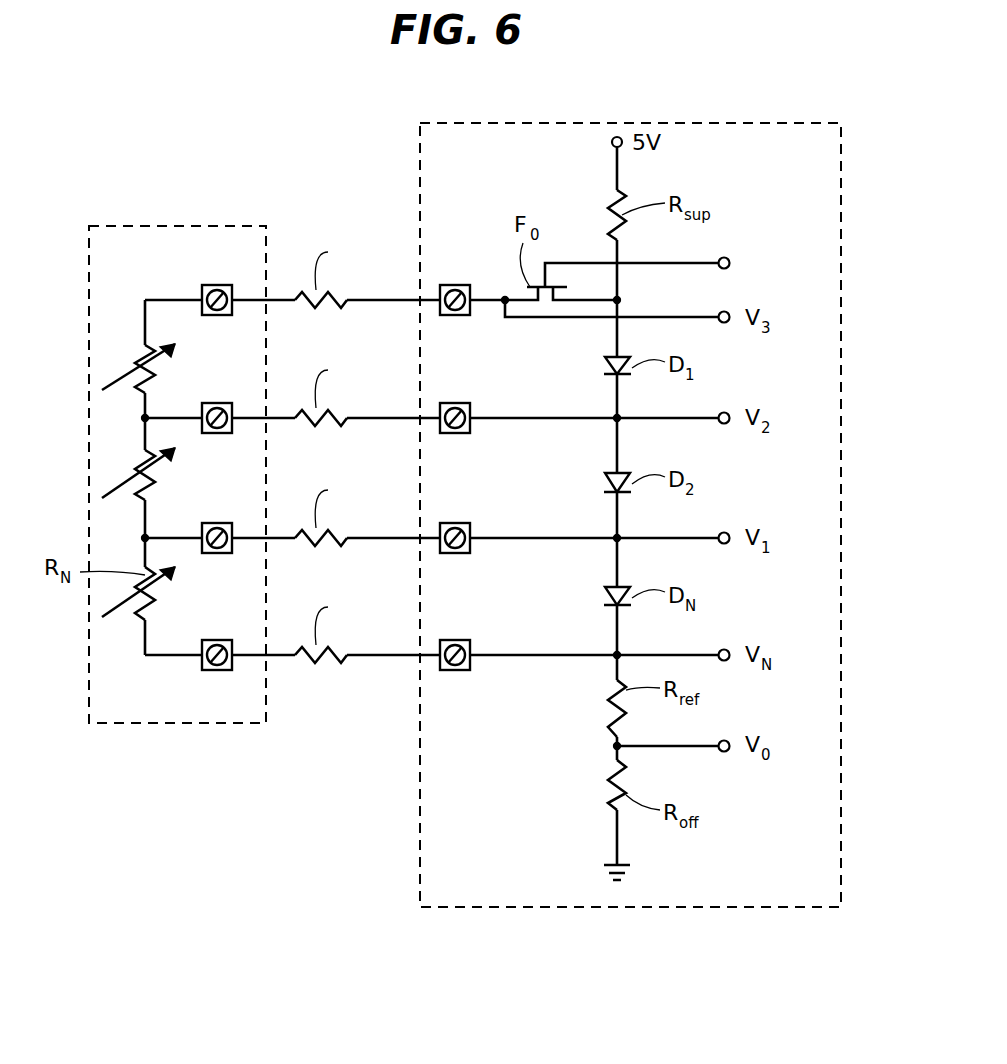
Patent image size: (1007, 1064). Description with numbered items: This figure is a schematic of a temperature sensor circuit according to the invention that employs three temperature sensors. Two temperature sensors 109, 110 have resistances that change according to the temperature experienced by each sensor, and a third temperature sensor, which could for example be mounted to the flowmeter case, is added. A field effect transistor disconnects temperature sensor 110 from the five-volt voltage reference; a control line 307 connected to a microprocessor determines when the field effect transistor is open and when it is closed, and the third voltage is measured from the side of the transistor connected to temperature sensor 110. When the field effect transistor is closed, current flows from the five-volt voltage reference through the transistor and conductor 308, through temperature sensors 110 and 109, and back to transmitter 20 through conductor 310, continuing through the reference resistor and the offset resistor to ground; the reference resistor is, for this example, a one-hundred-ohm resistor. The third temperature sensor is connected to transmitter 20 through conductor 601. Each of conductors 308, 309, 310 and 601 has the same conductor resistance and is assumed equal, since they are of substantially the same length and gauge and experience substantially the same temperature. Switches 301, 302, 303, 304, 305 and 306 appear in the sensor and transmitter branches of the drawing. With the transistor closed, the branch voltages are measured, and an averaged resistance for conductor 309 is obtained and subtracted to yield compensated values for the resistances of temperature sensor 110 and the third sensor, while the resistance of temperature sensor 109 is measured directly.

The transmitter 20 is at (841, 525).
The temperature sensor 110 is at (143, 345).
The temperature sensor 109 is at (145, 455).
The first switch 301 is at (213, 285).
The second switch 302 is at (217, 403).
The third switch 303 is at (222, 523).
The fourth switch 304 is at (459, 285).
The fifth switch 305 is at (460, 403).
The sixth switch 306 is at (460, 523).
The control line 307 is at (683, 263).
The conductor 308 is at (277, 302).
The conductor 309 is at (277, 420).
The conductor 310 is at (277, 540).
The conductor 601 is at (277, 657).